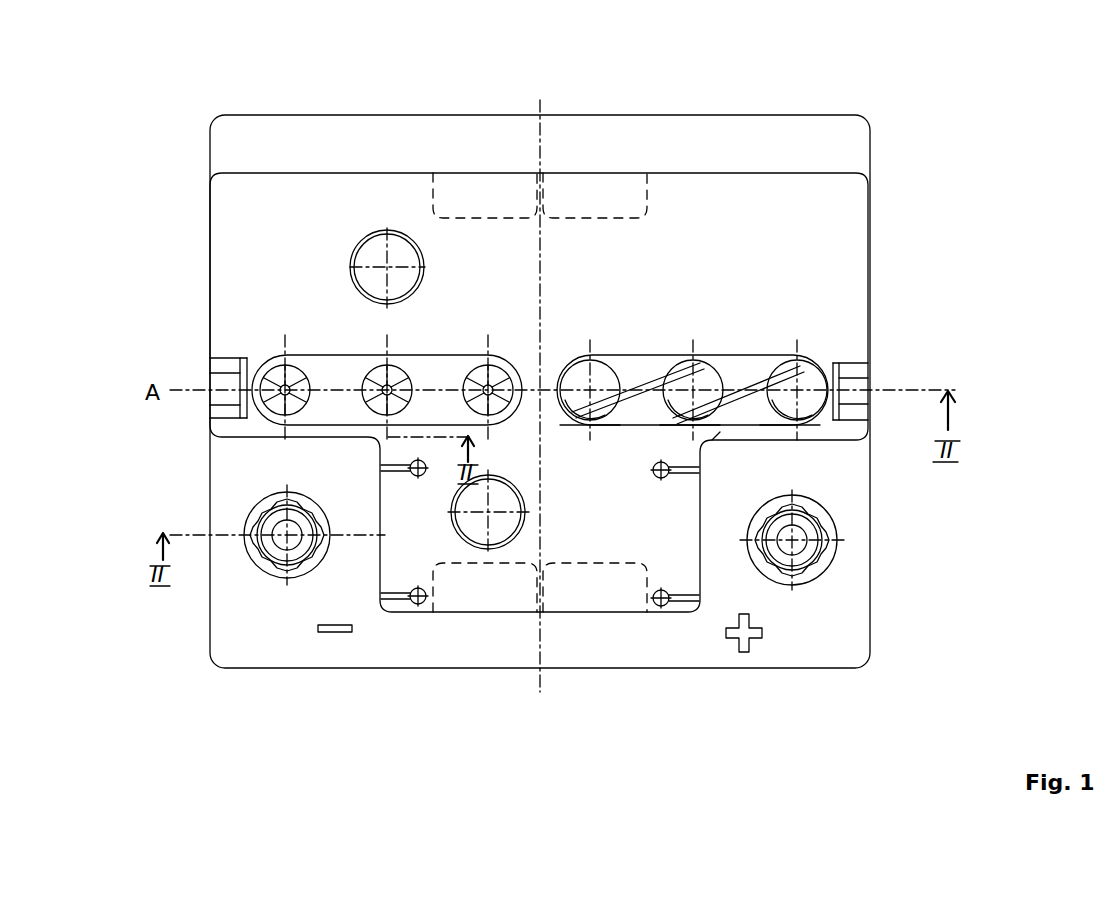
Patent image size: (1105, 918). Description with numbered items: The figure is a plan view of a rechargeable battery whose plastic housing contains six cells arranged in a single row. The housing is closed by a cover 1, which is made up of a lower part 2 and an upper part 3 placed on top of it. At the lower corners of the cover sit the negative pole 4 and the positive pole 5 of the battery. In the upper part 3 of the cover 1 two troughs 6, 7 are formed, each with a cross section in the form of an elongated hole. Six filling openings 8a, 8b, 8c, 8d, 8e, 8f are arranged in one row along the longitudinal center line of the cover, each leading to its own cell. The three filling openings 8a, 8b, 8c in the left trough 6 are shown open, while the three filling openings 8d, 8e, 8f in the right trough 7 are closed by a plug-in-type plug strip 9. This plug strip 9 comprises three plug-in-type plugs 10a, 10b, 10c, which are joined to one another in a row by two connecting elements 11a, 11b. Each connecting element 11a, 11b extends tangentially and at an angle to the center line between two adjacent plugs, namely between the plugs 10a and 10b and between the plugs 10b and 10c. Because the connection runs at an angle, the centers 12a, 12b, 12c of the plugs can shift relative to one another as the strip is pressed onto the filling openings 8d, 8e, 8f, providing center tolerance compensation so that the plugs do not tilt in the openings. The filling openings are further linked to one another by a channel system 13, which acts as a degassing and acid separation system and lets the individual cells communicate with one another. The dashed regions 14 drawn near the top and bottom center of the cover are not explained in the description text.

The cover 1 is at (592, 355).
The lower part 2 is at (850, 136).
The upper part 3 is at (855, 227).
The negative pole 4 is at (272, 560).
The positive pole 5 is at (800, 555).
The trough 6 is at (295, 354).
The trough 7 is at (739, 399).
The filling opening 8a is at (286, 362).
The filling opening 8b is at (386, 366).
The filling opening 8c is at (495, 370).
The filling opening 8d is at (582, 353).
The filling opening 8e is at (692, 353).
The filling opening 8f is at (797, 353).
The plug-in-type plug strip 9 is at (724, 445).
The plug-in-type plug 10a is at (566, 430).
The plug-in-type plug 10b is at (681, 432).
The plug-in-type plug 10c is at (770, 430).
The connecting element 11a is at (627, 388).
The connecting element 11b is at (744, 388).
The center 12a is at (584, 405).
The center 12b is at (690, 405).
The center 12c is at (795, 408).
The channel system 13 is at (226, 392).
The handle recess 14 is at (485, 188).